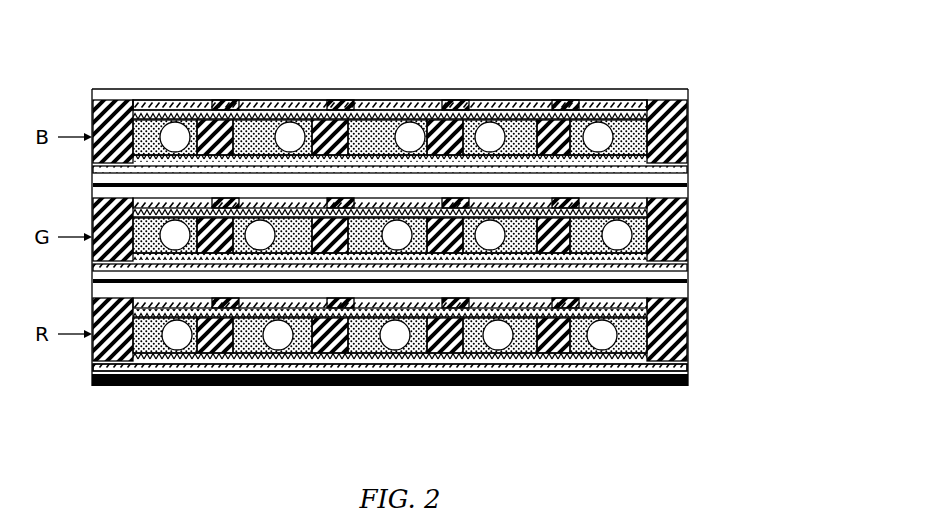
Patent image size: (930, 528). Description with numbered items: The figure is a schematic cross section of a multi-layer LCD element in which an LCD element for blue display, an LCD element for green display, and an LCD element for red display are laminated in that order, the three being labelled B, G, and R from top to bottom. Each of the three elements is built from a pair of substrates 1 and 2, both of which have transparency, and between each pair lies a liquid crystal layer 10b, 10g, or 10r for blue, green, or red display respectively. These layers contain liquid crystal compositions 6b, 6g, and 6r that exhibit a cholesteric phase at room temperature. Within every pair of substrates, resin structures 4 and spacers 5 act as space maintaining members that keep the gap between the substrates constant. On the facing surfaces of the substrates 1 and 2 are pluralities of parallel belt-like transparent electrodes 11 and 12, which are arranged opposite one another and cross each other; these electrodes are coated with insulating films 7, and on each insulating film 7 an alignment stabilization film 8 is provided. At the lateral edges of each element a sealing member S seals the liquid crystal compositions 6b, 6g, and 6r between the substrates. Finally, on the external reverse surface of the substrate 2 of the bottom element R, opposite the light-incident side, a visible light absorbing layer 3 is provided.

The substrate 1 is at (169, 192).
The substrate 2 is at (148, 362).
The visible light absorbing layer 3 is at (220, 386).
The resin structure 4 is at (221, 104).
The spacer 5 is at (291, 135).
The liquid crystal composition for blue display 6b is at (263, 105).
The liquid crystal composition for green display 6g is at (358, 207).
The liquid crystal composition for red display 6r is at (522, 306).
The insulating film 7 is at (465, 316).
The alignment stabilization film 8 is at (553, 208).
The liquid crystal layer for blue display 10b is at (640, 137).
The liquid crystal layer for green display 10g is at (640, 237).
The liquid crystal layer for red display 10r is at (640, 334).
The transparent electrode 11 is at (374, 200).
The transparent electrode 12 is at (407, 150).
The sealing member S is at (662, 120).